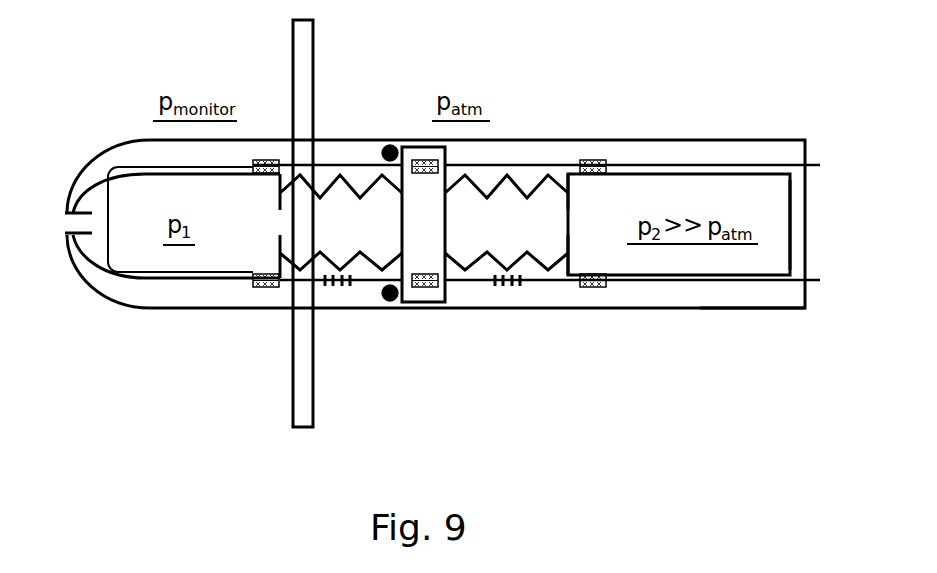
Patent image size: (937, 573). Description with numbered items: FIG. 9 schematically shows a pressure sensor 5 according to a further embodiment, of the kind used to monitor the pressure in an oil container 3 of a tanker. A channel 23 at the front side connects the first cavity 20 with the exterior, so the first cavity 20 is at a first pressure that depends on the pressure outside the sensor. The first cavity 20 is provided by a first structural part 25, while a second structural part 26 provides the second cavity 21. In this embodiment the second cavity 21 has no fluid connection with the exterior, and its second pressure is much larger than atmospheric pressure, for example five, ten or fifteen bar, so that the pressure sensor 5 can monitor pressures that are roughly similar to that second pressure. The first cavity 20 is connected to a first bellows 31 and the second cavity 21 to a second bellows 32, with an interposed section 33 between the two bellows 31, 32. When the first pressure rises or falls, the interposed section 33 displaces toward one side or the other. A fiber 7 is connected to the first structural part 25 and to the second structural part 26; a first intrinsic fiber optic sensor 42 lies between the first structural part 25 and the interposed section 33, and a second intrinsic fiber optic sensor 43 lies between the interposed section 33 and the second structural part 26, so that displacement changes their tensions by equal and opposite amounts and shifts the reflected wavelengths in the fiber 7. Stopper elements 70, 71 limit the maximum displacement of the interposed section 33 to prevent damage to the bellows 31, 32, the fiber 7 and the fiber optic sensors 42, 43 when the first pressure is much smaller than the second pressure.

The oil container 3 is at (293, 43).
The pressure sensor 5 is at (675, 138).
The fiber 7 is at (758, 282).
The first cavity 20 is at (85, 252).
The second cavity 21 is at (790, 222).
The channel 23 is at (78, 240).
The first structural part 25 is at (138, 175).
The second structural part 26 is at (743, 173).
The first bellows 31 is at (522, 185).
The second bellows 32 is at (368, 185).
The interposed section 33 is at (427, 228).
The first intrinsic fiber optic sensor 42 is at (340, 289).
The second intrinsic fiber optic sensor 43 is at (508, 289).
The stopper element 70 is at (391, 147).
The stopper element 71 is at (390, 301).